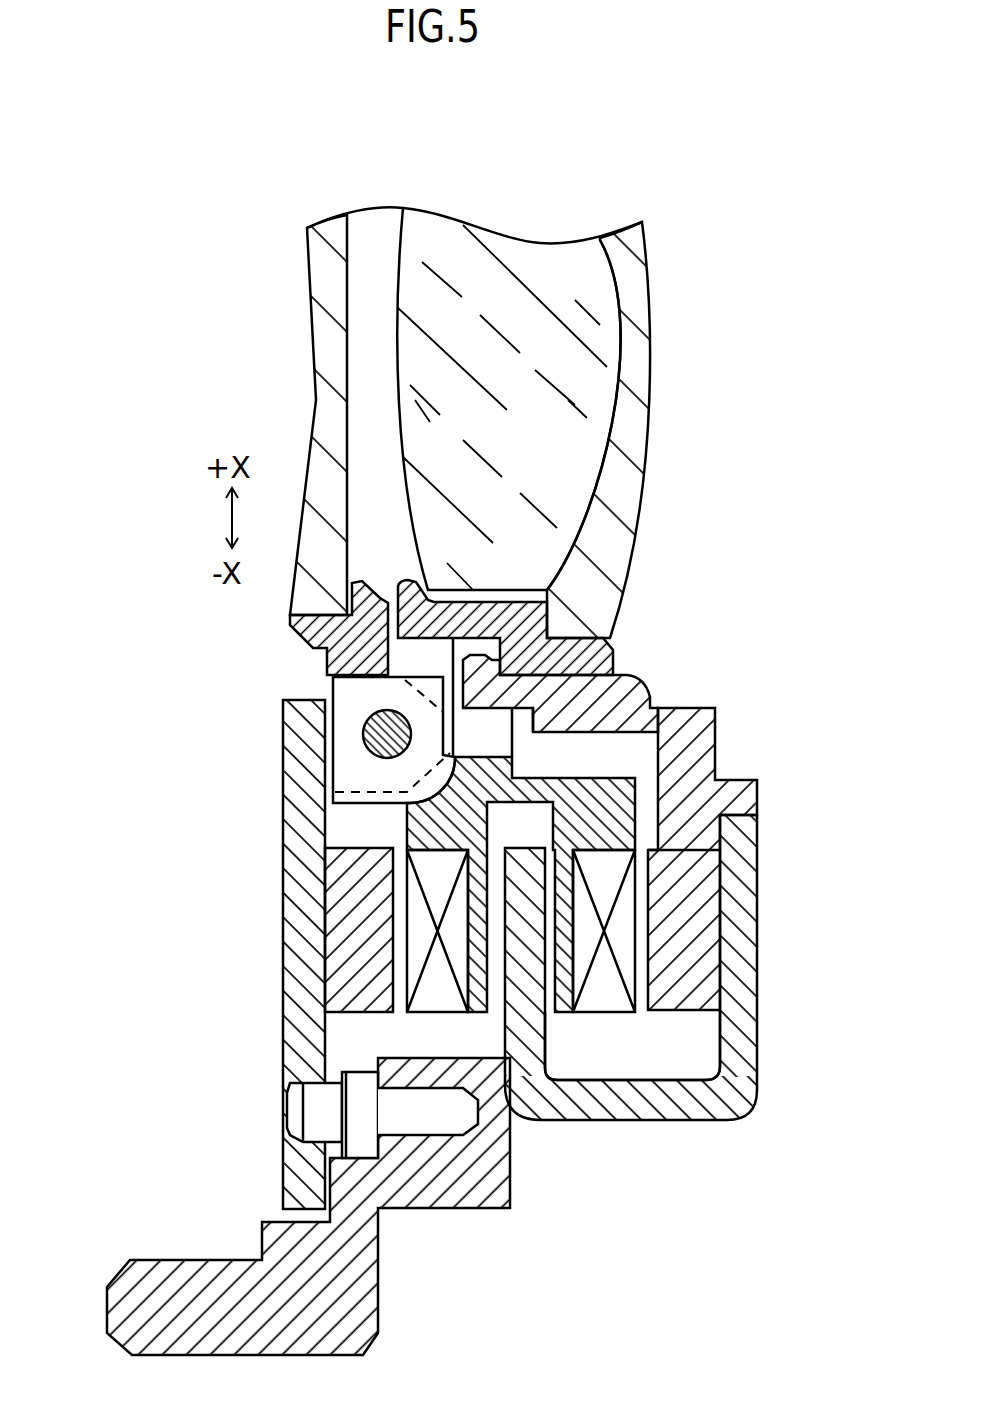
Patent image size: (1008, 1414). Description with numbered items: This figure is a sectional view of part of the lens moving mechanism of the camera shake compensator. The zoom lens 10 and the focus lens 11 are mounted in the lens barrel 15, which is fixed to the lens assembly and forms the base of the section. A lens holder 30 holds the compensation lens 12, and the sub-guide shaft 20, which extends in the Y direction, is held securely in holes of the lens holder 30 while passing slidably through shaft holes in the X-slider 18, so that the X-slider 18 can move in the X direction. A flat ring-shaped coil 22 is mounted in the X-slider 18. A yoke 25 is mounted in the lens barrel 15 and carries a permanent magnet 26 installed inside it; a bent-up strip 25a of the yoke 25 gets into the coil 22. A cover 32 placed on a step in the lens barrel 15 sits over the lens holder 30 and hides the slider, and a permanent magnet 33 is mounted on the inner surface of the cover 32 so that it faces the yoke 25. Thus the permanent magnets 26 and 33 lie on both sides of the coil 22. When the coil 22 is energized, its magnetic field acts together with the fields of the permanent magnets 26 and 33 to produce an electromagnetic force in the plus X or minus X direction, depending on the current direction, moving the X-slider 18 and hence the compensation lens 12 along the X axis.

The zoom lens 10 is at (645, 300).
The focus lens 11 is at (590, 375).
The compensation lens 12 is at (320, 408).
The lens barrel 15 is at (380, 1267).
The X-slider 18 is at (500, 730).
The sub-guide shaft 20 is at (370, 737).
The coil 22 is at (625, 943).
The yoke 25 is at (678, 1121).
The bent-up strip 25a is at (548, 1038).
The permanent magnet 26 is at (705, 897).
The lens holder 30 is at (330, 660).
The cover 32 is at (297, 852).
The permanent magnet 33 is at (340, 957).